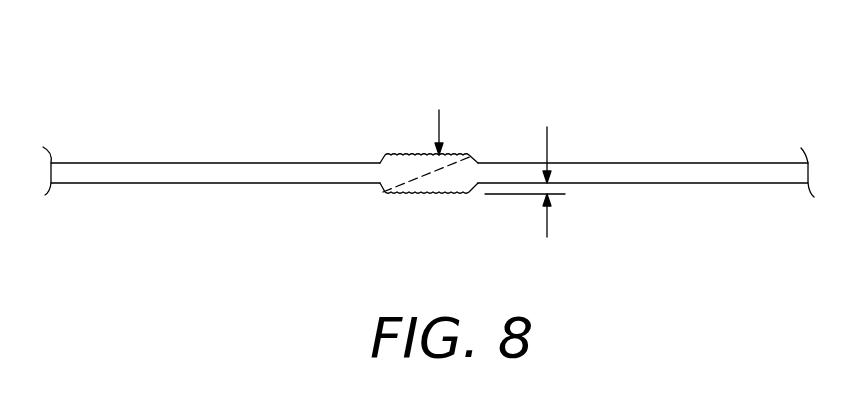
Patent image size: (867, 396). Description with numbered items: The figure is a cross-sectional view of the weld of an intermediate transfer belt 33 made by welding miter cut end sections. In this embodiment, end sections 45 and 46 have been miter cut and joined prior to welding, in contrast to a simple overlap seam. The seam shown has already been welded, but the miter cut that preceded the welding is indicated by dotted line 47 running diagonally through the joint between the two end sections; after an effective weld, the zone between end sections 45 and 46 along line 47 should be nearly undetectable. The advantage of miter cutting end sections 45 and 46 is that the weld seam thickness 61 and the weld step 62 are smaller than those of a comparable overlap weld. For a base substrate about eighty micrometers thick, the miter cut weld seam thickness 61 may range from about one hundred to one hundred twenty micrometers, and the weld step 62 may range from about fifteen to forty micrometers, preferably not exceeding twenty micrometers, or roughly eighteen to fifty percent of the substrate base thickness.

The tubular shaft 33 is at (665, 163).
The end section 45 is at (455, 154).
The end section 46 is at (465, 195).
The dotted line 47 is at (427, 177).
The weld seam thickness 61 is at (440, 192).
The weld step 62 is at (558, 189).